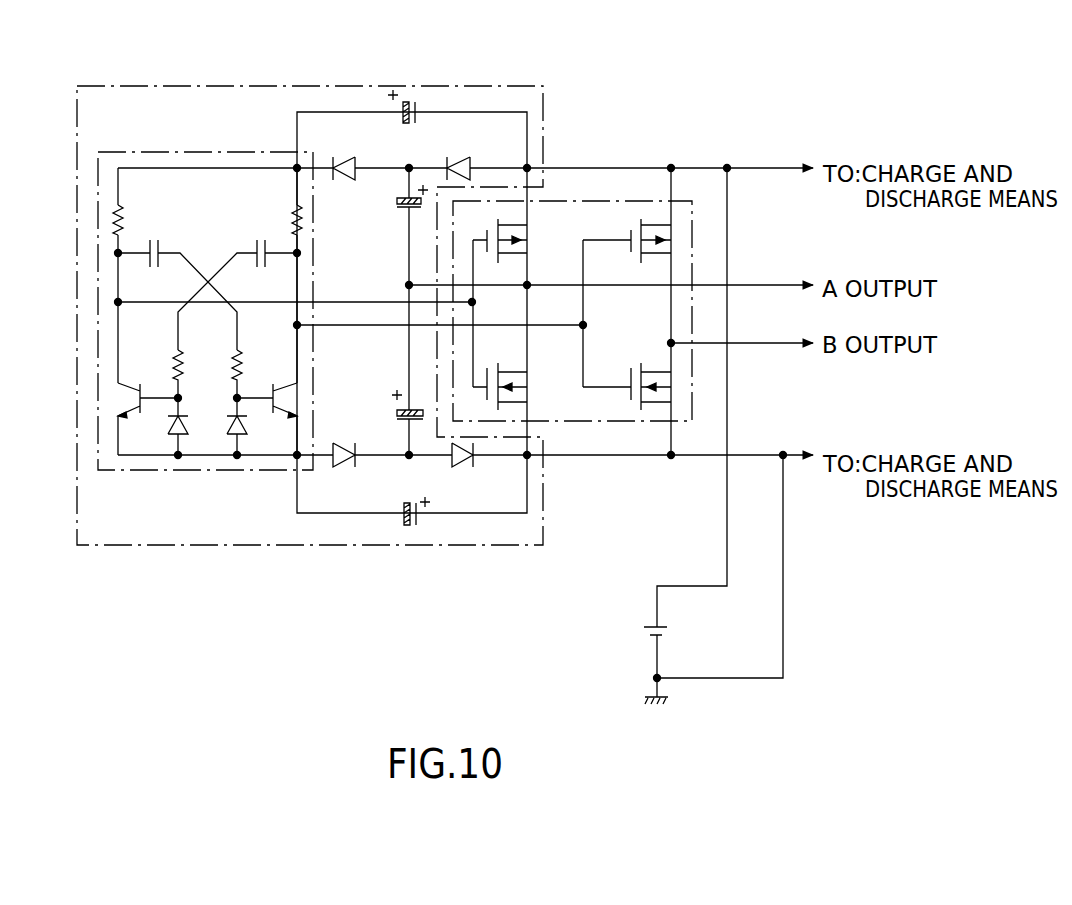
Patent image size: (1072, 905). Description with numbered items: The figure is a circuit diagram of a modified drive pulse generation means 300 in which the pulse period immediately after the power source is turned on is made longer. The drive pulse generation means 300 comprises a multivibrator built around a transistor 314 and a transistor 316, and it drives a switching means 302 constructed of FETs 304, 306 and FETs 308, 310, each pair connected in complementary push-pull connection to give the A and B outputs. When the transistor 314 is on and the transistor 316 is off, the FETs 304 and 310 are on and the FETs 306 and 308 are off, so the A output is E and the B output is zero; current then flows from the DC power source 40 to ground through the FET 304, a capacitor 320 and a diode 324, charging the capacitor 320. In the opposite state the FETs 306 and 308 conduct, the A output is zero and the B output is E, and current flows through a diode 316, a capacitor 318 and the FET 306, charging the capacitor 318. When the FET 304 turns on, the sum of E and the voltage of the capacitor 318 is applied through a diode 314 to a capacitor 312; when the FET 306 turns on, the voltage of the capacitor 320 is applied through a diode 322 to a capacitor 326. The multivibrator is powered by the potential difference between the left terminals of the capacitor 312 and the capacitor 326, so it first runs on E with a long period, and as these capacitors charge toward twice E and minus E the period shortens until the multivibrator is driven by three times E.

The drive pulse generation means 300 is at (323, 86).
The switching means 302 is at (682, 267).
The FET 304 is at (530, 228).
The FET 306 is at (530, 391).
The FET 308 is at (629, 243).
The FET 310 is at (633, 366).
The capacitor 312 is at (203, 151).
The transistor / diode 314 is at (142, 387).
The transistor / diode 316 is at (283, 388).
The capacitor 318 is at (398, 209).
The capacitor 320 is at (394, 406).
The diode 322 is at (346, 442).
The diode 324 is at (463, 466).
The capacitor 326 is at (404, 508).
The DC power source 40 is at (652, 639).